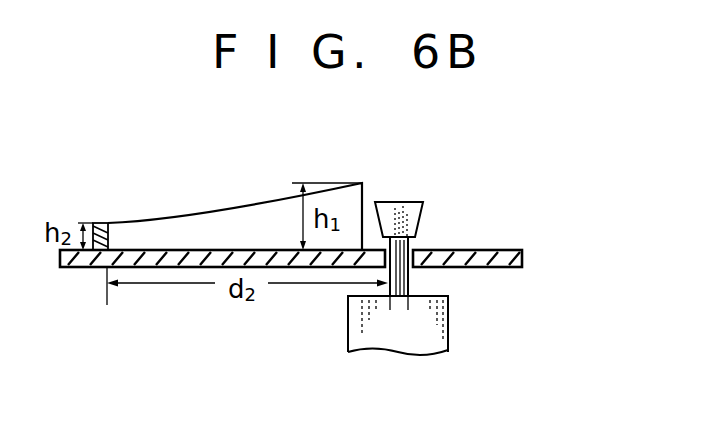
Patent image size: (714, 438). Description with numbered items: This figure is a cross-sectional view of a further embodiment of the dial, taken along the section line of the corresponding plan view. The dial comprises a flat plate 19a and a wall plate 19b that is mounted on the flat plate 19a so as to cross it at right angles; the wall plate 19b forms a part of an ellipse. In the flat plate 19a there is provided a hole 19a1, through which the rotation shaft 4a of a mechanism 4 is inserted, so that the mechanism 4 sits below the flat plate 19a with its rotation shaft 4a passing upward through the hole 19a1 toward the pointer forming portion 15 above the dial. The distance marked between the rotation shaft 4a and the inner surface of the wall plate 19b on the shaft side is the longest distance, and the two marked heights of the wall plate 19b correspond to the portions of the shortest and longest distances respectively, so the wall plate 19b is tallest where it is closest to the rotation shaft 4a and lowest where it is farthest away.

The mechanism 4 is at (398, 337).
The rotation shaft 4a is at (402, 297).
The pointer forming portion 15 is at (423, 202).
The flat plate 19a is at (78, 268).
The hole 19a1 is at (411, 268).
The wall plate 19b is at (191, 228).